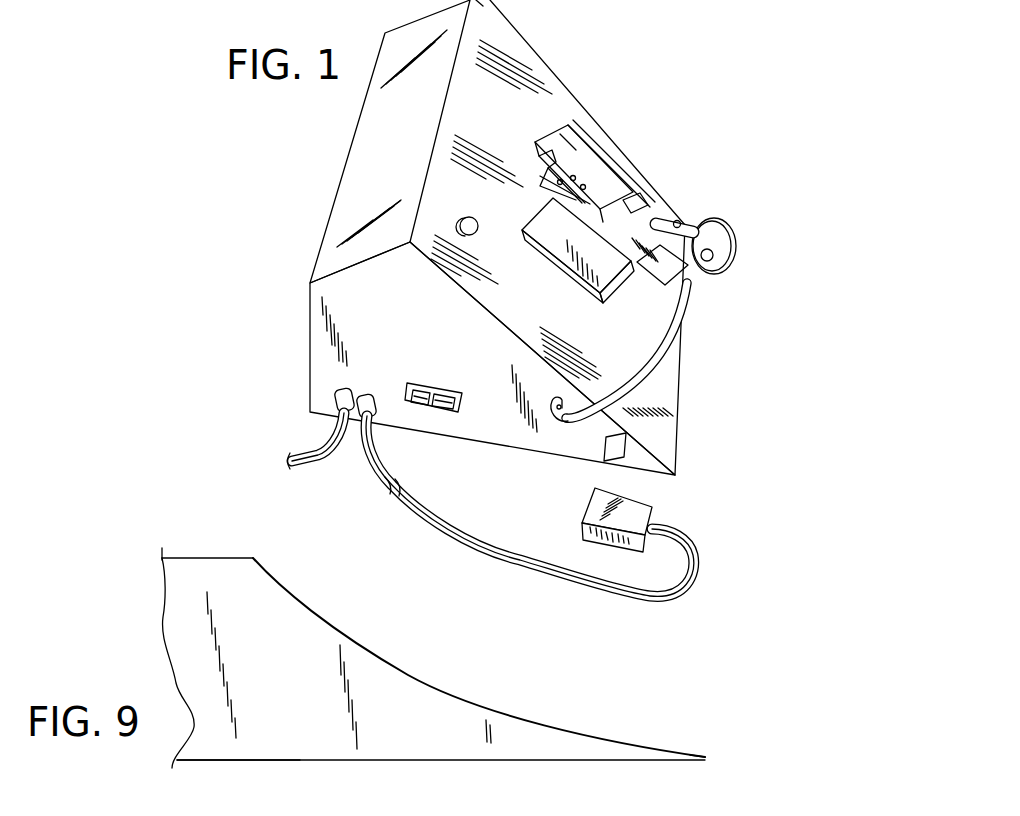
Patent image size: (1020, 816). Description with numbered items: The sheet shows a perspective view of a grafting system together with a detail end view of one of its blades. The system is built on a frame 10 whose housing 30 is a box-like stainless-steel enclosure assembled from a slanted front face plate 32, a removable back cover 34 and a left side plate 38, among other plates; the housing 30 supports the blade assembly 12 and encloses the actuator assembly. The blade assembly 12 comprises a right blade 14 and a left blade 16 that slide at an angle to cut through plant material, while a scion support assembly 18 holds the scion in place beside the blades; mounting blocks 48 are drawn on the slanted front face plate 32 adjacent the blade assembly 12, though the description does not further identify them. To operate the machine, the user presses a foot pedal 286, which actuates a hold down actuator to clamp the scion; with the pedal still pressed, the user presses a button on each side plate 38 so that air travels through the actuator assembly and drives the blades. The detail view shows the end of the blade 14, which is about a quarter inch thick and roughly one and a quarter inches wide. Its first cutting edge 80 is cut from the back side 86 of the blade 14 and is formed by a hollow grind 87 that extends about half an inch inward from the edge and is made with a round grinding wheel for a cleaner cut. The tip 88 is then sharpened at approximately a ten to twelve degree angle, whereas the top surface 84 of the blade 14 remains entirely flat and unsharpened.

In FIG. 1, the frame 10 is at (622, 192).
In FIG. 1, the blade assembly 12 is at (616, 168).
In FIG. 1, the right blade 14 is at (638, 205).
In FIG. 9, the right blade 14 is at (230, 760).
In FIG. 1, the left blade 16 is at (660, 222).
In FIG. 1, the scion support assembly 18 is at (648, 282).
In FIG. 1, the housing 30 is at (528, 44).
In FIG. 1, the slanted front face plate 32 is at (657, 393).
In FIG. 1, the removable back cover 34 is at (374, 147).
In FIG. 1, the left side plate 38 is at (350, 337).
In FIG. 1, the clamp block 48 is at (552, 140).
In FIG. 1, the foot pedal 286 is at (640, 510).
In FIG. 9, the first cutting edge 80 is at (440, 646).
In FIG. 9, the top surface 84 is at (518, 762).
In FIG. 9, the back side 86 is at (222, 558).
In FIG. 9, the hollow grind 87 is at (440, 693).
In FIG. 9, the tip 88 is at (703, 745).